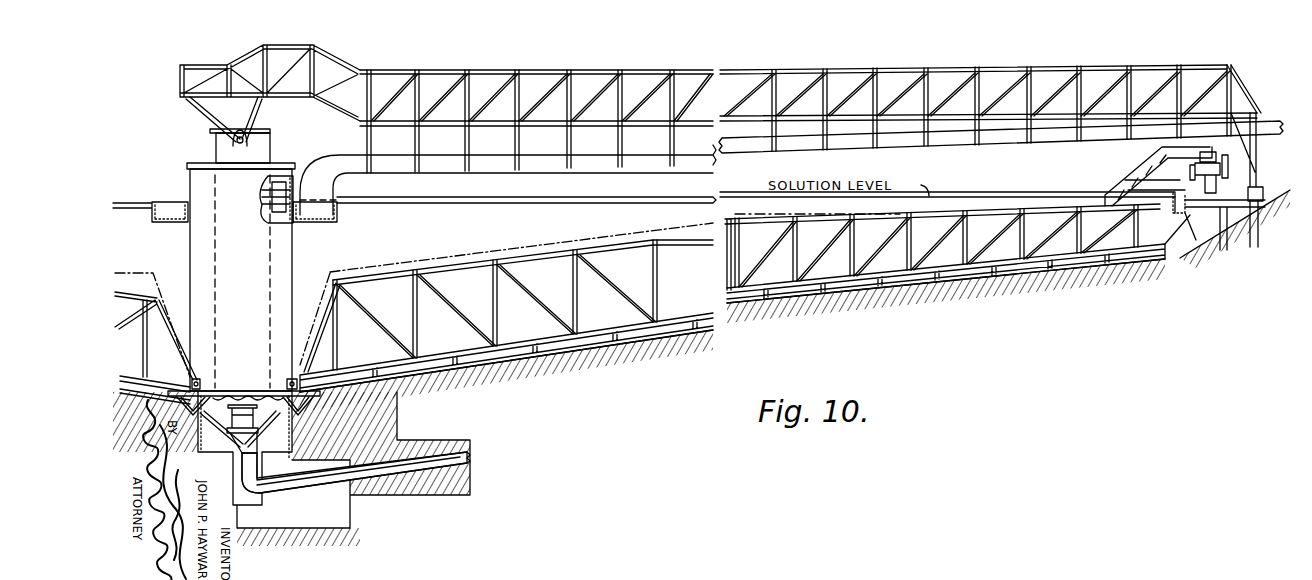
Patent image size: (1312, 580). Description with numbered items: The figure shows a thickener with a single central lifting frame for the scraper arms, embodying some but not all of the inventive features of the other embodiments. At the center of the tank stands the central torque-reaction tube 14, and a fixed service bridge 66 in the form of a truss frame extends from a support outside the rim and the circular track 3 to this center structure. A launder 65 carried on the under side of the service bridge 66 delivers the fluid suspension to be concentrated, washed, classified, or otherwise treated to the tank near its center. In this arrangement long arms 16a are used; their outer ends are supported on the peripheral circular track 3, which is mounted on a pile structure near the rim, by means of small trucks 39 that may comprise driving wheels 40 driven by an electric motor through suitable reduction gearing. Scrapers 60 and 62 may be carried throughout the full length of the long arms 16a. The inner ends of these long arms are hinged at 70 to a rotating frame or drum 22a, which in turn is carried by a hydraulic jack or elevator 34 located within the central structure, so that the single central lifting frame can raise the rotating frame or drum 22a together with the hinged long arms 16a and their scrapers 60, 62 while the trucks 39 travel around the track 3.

The circular track 3 is at (1210, 188).
The central torque-reaction tube 14 is at (204, 151).
The long arms 16a is at (136, 267).
The rotating frame or drum 22a is at (292, 252).
The hydraulic jack or elevator 34 is at (250, 423).
The small trucks 39 is at (1233, 143).
The driving wheels 40 is at (1200, 192).
The scrapers 60 is at (908, 286).
The scrapers 62 is at (538, 352).
The launder 65 is at (1282, 116).
The fixed service bridge 66 is at (745, 60).
The hinge 70 is at (288, 381).